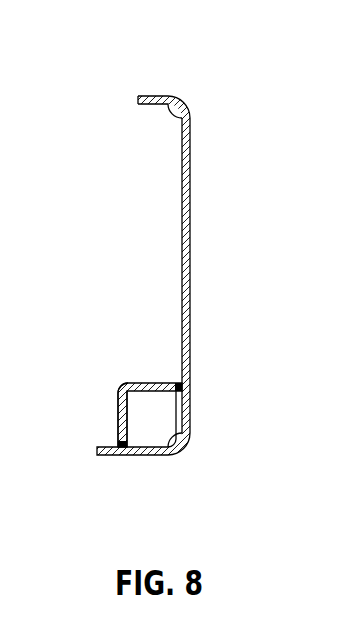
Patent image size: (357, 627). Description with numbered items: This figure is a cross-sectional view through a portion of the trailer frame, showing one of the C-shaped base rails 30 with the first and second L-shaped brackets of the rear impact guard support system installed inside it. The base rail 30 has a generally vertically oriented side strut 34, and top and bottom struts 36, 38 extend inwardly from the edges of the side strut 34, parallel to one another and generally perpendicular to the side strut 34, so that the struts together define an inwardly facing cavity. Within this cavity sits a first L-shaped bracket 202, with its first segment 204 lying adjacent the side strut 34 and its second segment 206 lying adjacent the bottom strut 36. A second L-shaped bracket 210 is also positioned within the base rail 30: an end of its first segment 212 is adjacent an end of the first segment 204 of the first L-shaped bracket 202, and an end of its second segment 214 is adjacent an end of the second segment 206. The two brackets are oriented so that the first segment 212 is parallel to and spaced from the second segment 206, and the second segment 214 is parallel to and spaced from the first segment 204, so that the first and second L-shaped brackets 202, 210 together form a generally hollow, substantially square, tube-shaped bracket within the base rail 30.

The base rail 30 is at (186, 275).
The side strut 34 is at (191, 293).
The top strut 36 is at (186, 462).
The bottom strut 38 is at (152, 95).
The first L-shaped bracket 202 is at (190, 401).
The first segment 204 is at (187, 433).
The second segment 206 is at (135, 456).
The second L-shaped bracket 210 is at (101, 354).
The first segment 212 is at (174, 383).
The second segment 214 is at (118, 418).